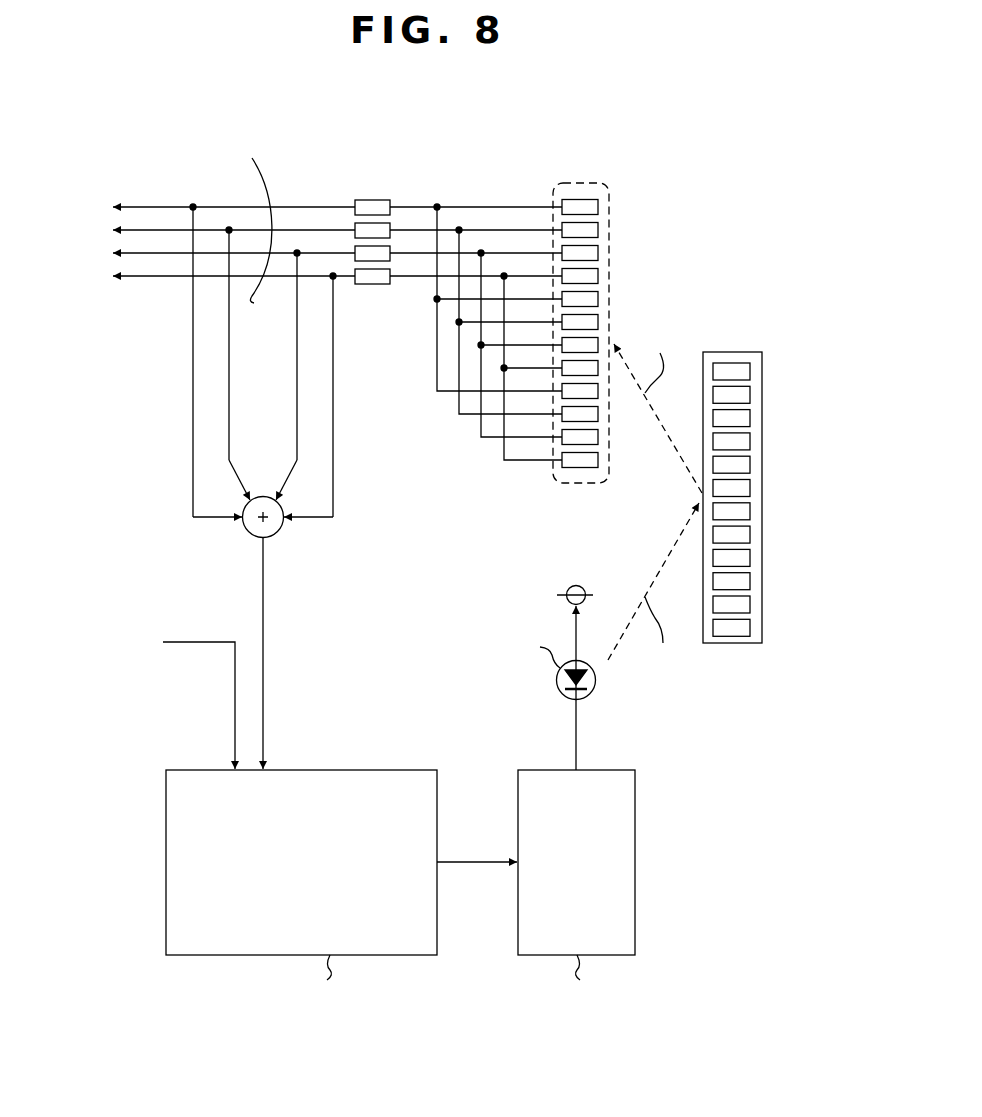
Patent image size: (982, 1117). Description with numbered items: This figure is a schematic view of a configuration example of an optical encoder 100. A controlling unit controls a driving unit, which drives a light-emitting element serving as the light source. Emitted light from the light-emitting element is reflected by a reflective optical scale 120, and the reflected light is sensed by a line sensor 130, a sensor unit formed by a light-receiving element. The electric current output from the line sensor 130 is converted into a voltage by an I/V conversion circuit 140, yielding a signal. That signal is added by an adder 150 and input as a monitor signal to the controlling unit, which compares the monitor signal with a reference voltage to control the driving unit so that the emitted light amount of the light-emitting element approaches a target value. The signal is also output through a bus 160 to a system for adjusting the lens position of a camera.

The optical encoder 100 is at (705, 138).
The reflective optical scale 120 is at (763, 395).
The line sensor 130 is at (582, 175).
The I/V conversion circuit 140 is at (396, 221).
The adder 150 is at (300, 542).
The bus 160 is at (102, 195).